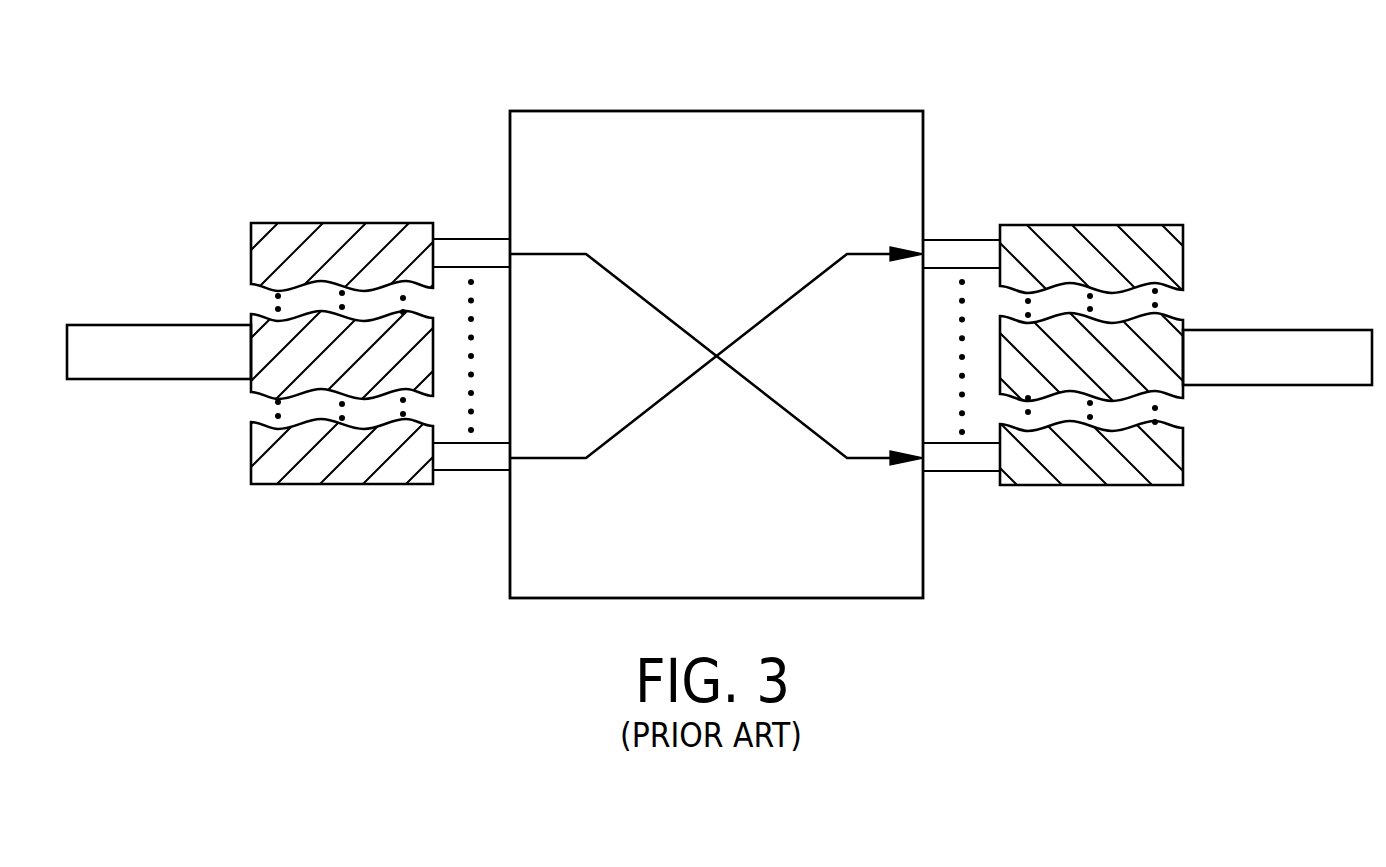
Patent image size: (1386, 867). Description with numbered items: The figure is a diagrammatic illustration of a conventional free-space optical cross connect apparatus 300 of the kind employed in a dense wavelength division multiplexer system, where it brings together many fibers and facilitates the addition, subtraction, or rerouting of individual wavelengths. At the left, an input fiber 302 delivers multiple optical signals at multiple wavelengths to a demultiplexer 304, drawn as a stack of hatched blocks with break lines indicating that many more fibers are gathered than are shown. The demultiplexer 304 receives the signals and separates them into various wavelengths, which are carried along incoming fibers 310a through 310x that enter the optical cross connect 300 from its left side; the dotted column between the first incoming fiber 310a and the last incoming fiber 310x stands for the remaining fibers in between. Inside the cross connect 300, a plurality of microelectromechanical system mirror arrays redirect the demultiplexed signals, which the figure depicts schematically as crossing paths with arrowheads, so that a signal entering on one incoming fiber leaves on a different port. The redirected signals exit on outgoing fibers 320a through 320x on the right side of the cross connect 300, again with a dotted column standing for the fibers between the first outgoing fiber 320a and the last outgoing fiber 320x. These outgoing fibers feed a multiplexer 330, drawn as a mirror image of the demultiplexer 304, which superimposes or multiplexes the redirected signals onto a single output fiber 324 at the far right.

The optical cross connect apparatus 300 is at (723, 110).
The input fiber 302 is at (173, 325).
The demultiplexer 304 is at (337, 484).
The incoming fiber 310a is at (471, 250).
The incoming fiber 310x is at (470, 465).
The outgoing fiber 320a is at (958, 250).
The outgoing fiber 320x is at (957, 465).
The output fiber 324 is at (1257, 330).
The multiplexer 330 is at (1092, 485).